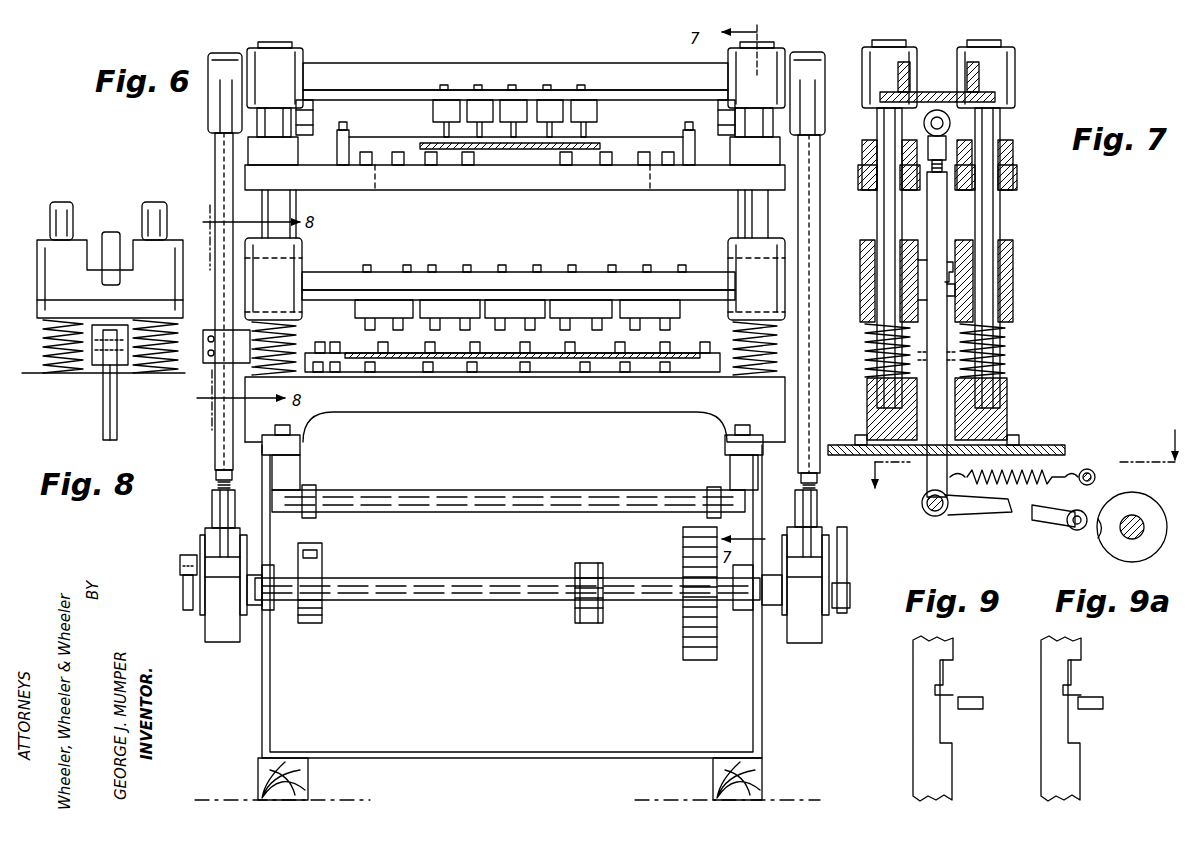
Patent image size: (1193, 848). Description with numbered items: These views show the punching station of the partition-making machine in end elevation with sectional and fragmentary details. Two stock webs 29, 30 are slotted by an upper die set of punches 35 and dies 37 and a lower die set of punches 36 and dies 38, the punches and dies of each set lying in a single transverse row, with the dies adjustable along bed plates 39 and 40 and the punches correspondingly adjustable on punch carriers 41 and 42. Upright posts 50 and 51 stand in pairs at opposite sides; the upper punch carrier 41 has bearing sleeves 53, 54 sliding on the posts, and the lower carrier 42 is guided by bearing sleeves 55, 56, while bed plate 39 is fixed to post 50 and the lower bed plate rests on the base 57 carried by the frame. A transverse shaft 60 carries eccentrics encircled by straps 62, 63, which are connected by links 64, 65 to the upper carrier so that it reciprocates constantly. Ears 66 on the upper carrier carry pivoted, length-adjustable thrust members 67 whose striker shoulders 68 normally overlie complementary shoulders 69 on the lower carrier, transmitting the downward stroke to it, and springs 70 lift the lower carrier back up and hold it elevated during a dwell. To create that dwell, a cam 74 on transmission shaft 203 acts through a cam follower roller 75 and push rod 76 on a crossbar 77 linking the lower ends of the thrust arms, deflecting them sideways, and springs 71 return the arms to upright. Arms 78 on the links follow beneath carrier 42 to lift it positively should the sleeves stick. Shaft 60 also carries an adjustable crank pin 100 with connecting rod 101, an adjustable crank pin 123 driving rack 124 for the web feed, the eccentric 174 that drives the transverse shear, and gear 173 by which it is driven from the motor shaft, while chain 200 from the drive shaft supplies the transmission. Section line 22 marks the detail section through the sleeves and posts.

In FIG. 7, the section line 22- 22 is at (1011, 467).
In FIG. 6, the stock web 29 is at (585, 150).
In FIG. 6, the stock web 30 is at (648, 352).
In FIG. 6, the punches 35 is at (444, 130).
In FIG. 6, the punches 36 is at (432, 326).
In FIG. 6, the dies 37 is at (446, 160).
In FIG. 6, the dies 38 is at (386, 364).
In FIG. 7, the dies 38 is at (958, 366).
In FIG. 6, the bed plate 39 is at (582, 185).
In FIG. 7, the bed plate 39 is at (978, 192).
In FIG. 6, the bed plate 40 is at (556, 372).
In FIG. 6, the punch carrier 41 is at (633, 95).
In FIG. 7, the punch carrier 41 is at (985, 98).
In FIG. 6, the punch carrier 42 is at (612, 290).
In FIG. 7, the punch carrier 42 is at (920, 300).
In FIG. 6, the upright post 50 is at (276, 206).
In FIG. 7, the upright post 50 is at (880, 122).
In FIG. 8, the upright post 50 is at (70, 212).
In FIG. 6, the upright post 51 is at (748, 210).
In FIG. 7, the upright post 51 is at (886, 210).
In FIG. 6, the bearing sleeve 53 is at (290, 68).
In FIG. 7, the bearing sleeve 53 is at (905, 58).
In FIG. 6, the bearing sleeve 54 is at (770, 70).
In FIG. 6, the bearing sleeve 55 is at (292, 262).
In FIG. 8, the bearing sleeve 55 is at (66, 275).
In FIG. 6, the bearing sleeve 56 is at (732, 275).
In FIG. 7, the bearing sleeve 56 is at (865, 268).
In FIG. 7, the base 57 is at (990, 392).
In FIG. 6, the shaft 60 is at (550, 593).
In FIG. 6, the strap 62 is at (226, 634).
In FIG. 6, the strap 63 is at (806, 638).
In FIG. 6, the link 64 is at (218, 180).
In FIG. 8, the link 64 is at (103, 428).
In FIG. 6, the link 65 is at (810, 212).
In FIG. 7, the link 65 is at (852, 204).
In FIG. 6, the ear 66 is at (313, 114).
In FIG. 7, the ear 66 is at (952, 118).
In FIG. 6, the thrust member 67 is at (300, 226).
In FIG. 7, the thrust member 67 is at (938, 230).
In FIG. 9, the thrust member 67 is at (945, 656).
In FIG. 9A, the thrust member 67 is at (1073, 656).
In FIG. 7, the striker shoulder 68 is at (958, 266).
In FIG. 9, the striker shoulder 68 is at (950, 686).
In FIG. 9A, the striker shoulder 68 is at (1078, 686).
In FIG. 7, the shoulder 69 is at (958, 282).
In FIG. 9, the shoulder 69 is at (968, 704).
In FIG. 9A, the shoulder 69 is at (1104, 703).
In FIG. 6, the spring 70 is at (292, 344).
In FIG. 7, the spring 70 is at (1000, 340).
In FIG. 8, the spring 70 is at (55, 375).
In FIG. 7, the spring 71 is at (1045, 476).
In FIG. 7, the cam 74 is at (1143, 516).
In FIG. 7, the cam follower roller 75 is at (1062, 532).
In FIG. 6, the push rod 76 is at (316, 488).
In FIG. 7, the push rod 76 is at (992, 514).
In FIG. 6, the crossbar 77 is at (505, 494).
In FIG. 7, the crossbar 77 is at (922, 503).
In FIG. 6, the arm 78 is at (220, 350).
In FIG. 7, the arm 78 is at (835, 317).
In FIG. 8, the arm 78 is at (98, 362).
In FIG. 6, the crank pin 100 is at (190, 556).
In FIG. 6, the connecting rod 101 is at (188, 608).
In FIG. 6, the crank pin 123 is at (843, 610).
In FIG. 6, the rack 124 is at (847, 560).
In FIG. 6, the gear 173 is at (682, 562).
In FIG. 6, the eccentric 174 is at (322, 568).
In FIG. 6, the chain 200 is at (592, 566).
In FIG. 7, the transmission shaft 203 is at (1122, 532).